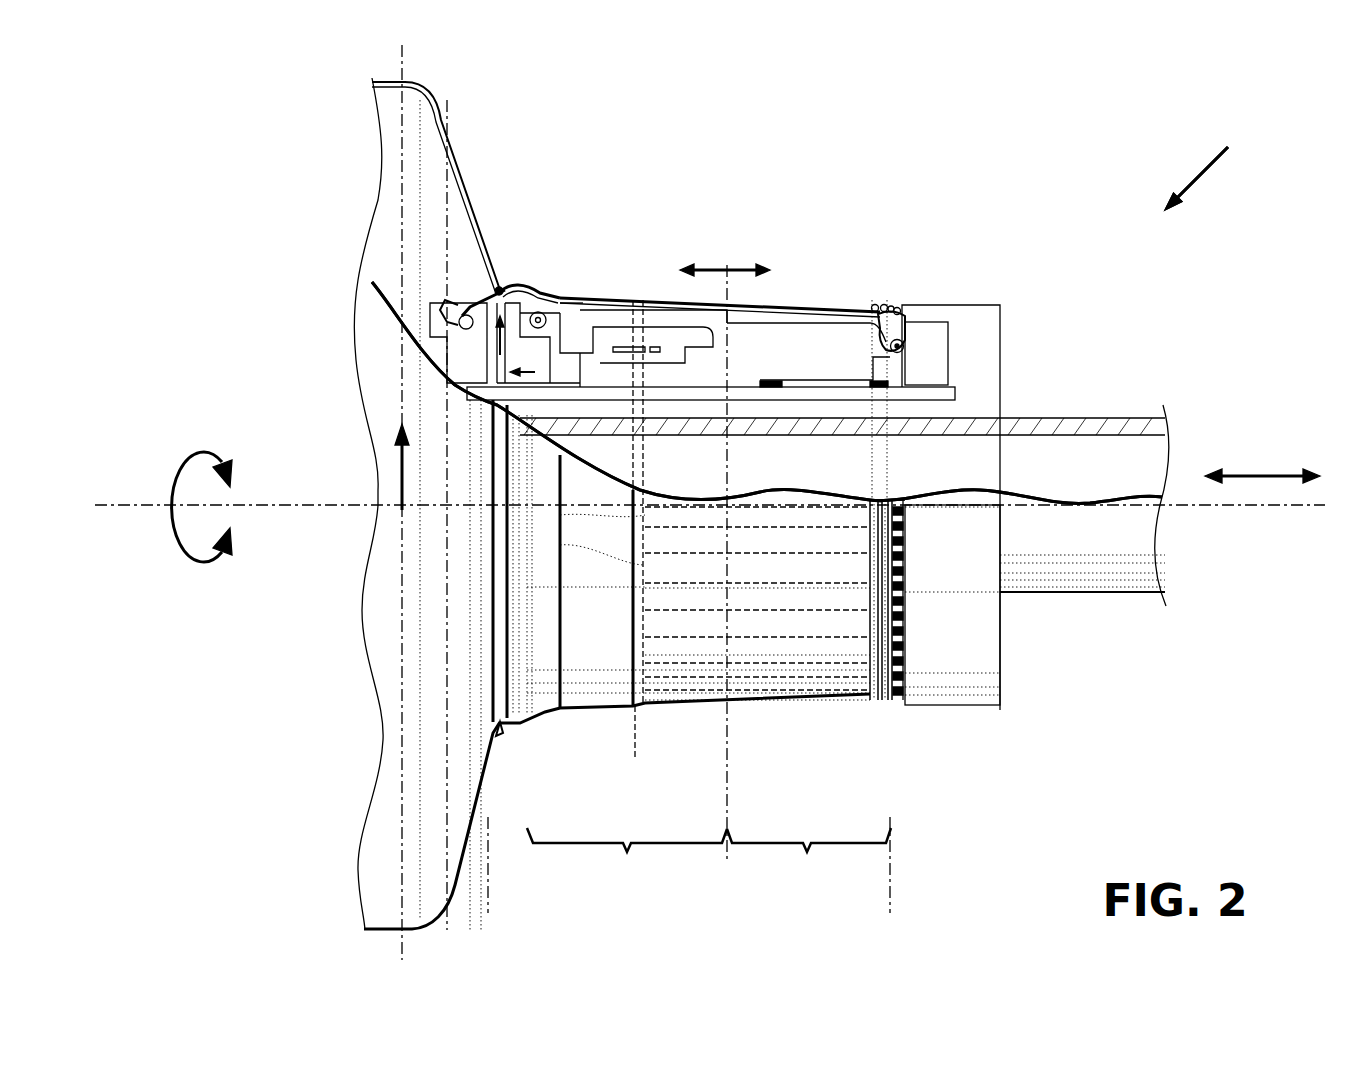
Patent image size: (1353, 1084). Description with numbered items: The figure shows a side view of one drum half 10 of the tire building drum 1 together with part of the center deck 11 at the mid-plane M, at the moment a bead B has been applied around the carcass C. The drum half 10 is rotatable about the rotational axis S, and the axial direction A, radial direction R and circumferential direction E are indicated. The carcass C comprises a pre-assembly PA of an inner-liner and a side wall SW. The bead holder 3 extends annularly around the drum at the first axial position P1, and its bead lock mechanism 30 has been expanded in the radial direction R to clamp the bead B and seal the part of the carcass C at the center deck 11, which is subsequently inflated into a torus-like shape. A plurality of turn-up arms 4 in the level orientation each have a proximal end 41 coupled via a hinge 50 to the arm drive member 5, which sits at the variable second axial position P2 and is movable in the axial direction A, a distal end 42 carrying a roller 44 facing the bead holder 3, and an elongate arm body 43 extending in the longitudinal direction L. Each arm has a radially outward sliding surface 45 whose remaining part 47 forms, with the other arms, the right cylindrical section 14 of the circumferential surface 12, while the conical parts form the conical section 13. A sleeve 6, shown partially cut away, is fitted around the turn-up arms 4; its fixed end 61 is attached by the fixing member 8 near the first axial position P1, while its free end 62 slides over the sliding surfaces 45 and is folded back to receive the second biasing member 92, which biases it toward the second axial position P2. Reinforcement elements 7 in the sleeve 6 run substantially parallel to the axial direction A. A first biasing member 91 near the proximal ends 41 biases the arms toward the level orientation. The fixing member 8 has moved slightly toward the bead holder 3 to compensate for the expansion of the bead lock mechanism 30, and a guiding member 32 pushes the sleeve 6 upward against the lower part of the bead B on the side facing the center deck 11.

The tire building drum 1 is at (1219, 162).
The drum half 10 is at (1219, 162).
The center deck 11 is at (380, 176).
The bead holder 3 is at (480, 340).
The bead lock mechanism 30 is at (480, 340).
The guiding member 32 is at (486, 300).
The fixing member 8 is at (487, 330).
The first end 61 is at (451, 290).
The second end 62 is at (872, 305).
The roller 44 is at (533, 290).
The distal end 42 is at (540, 308).
The turn-up arm 4 is at (770, 305).
The arm body 43 is at (797, 323).
The sliding surface 45 is at (729, 324).
The remaining part 47 is at (661, 312).
The proximal end 41 is at (893, 327).
The hinge 50 is at (903, 343).
The arm drive member 5 is at (902, 372).
The sleeve 6 is at (827, 304).
The reinforcement elements 7 is at (593, 539).
The circumferential surface 12 is at (762, 700).
The conical section 13 is at (809, 857).
The right cylindrical section 14 is at (627, 857).
The first biasing member 91 is at (891, 310).
The second biasing member 92 is at (886, 305).
The mid-plane M is at (415, 499).
The rotational axis S is at (701, 505).
The circumferential direction E is at (208, 511).
The radial direction R is at (409, 467).
The axial direction A is at (1262, 458).
The longitudinal direction L is at (725, 255).
The carcass C is at (380, 640).
The bead B is at (503, 290).
The pre-assembly PA is at (473, 167).
The side wall SW is at (557, 295).
The first axial position P1 is at (484, 881).
The second axial position P2 is at (892, 881).